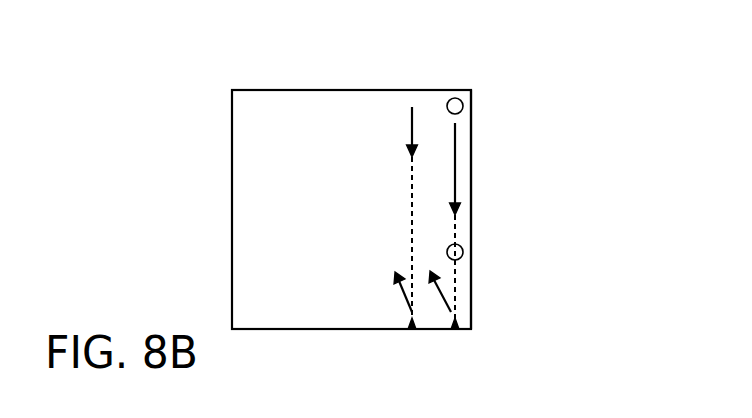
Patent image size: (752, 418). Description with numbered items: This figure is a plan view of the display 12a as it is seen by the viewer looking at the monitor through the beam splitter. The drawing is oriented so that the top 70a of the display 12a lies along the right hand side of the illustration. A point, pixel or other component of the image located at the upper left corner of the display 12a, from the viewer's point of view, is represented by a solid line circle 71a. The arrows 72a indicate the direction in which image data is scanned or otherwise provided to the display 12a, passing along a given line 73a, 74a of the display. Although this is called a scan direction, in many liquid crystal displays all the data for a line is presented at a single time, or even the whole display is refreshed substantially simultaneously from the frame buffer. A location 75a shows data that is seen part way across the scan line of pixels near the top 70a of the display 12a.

The display 12a is at (363, 90).
The top of the display 70a is at (471, 110).
The solid line circle 71a is at (455, 98).
The arrows 72a is at (455, 173).
The line 73a is at (456, 332).
The line 74a is at (413, 333).
The location 75a is at (463, 253).